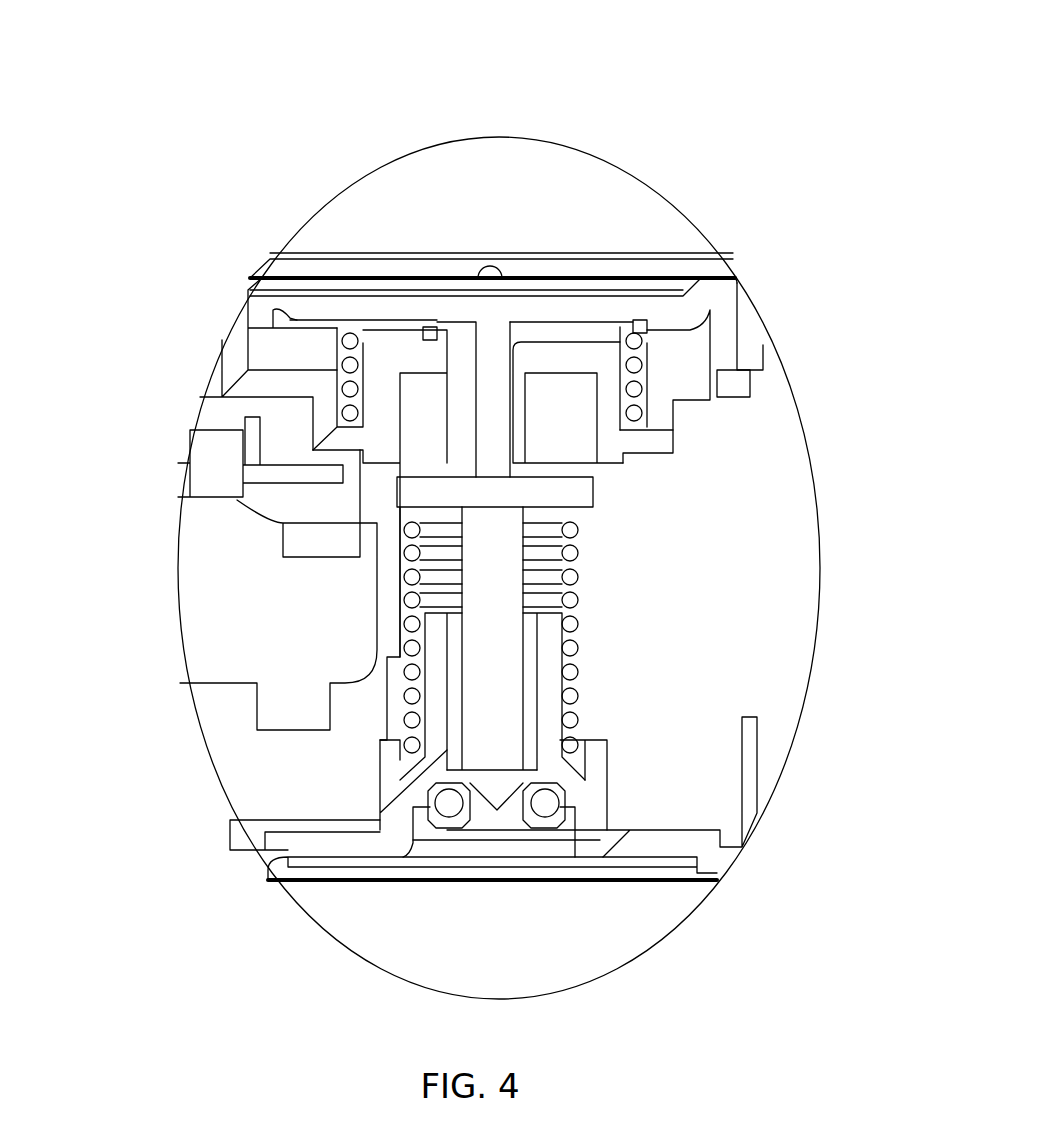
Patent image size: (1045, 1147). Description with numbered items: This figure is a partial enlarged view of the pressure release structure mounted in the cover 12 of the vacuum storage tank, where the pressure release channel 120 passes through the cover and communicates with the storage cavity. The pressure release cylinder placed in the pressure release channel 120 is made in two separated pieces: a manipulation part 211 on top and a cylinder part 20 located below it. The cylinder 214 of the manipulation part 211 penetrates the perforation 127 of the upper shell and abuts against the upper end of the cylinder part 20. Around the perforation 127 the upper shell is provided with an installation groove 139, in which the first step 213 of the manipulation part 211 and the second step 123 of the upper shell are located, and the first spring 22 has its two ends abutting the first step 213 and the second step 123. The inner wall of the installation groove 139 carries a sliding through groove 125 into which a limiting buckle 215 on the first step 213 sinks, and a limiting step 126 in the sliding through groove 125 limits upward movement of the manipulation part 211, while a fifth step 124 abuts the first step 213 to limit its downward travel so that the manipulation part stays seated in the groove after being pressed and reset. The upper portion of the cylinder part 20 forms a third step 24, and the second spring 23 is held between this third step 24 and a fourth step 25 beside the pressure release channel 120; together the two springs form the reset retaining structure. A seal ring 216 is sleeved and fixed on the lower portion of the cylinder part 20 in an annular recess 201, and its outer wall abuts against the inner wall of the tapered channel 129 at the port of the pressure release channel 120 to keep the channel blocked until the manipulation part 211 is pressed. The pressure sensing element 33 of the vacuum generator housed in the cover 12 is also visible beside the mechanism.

The manipulation part 211 is at (485, 27).
The cylinder 214 is at (487, 427).
The first step 213 is at (541, 327).
The first spring 22 is at (613, 417).
The perforation 127 is at (440, 335).
The fifth step 124 is at (405, 340).
The sliding through groove 125 is at (690, 380).
The limiting buckle 215 is at (740, 357).
The installation groove 139 is at (297, 340).
The limiting step 126 is at (715, 372).
The second step 123 is at (600, 430).
The second spring 23 is at (403, 553).
The third step 24 is at (565, 525).
The cylinder part 20 is at (500, 600).
The pressure sensing element 33 is at (313, 590).
The pressure release channel 120 is at (528, 688).
The fourth step 25 is at (380, 765).
The tapered channel 129 is at (560, 797).
The cover 12 is at (280, 852).
The seal ring 216 is at (553, 805).
The annular recess 201 is at (520, 800).